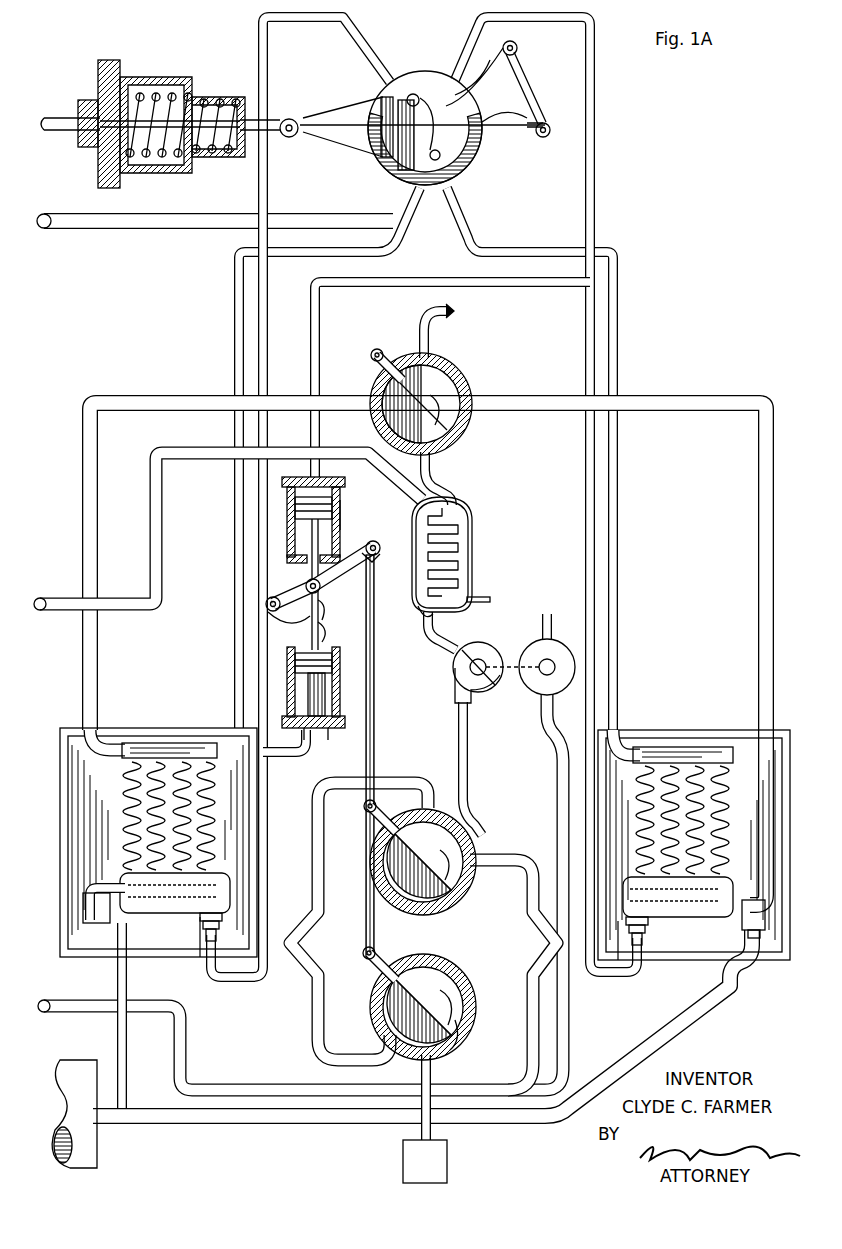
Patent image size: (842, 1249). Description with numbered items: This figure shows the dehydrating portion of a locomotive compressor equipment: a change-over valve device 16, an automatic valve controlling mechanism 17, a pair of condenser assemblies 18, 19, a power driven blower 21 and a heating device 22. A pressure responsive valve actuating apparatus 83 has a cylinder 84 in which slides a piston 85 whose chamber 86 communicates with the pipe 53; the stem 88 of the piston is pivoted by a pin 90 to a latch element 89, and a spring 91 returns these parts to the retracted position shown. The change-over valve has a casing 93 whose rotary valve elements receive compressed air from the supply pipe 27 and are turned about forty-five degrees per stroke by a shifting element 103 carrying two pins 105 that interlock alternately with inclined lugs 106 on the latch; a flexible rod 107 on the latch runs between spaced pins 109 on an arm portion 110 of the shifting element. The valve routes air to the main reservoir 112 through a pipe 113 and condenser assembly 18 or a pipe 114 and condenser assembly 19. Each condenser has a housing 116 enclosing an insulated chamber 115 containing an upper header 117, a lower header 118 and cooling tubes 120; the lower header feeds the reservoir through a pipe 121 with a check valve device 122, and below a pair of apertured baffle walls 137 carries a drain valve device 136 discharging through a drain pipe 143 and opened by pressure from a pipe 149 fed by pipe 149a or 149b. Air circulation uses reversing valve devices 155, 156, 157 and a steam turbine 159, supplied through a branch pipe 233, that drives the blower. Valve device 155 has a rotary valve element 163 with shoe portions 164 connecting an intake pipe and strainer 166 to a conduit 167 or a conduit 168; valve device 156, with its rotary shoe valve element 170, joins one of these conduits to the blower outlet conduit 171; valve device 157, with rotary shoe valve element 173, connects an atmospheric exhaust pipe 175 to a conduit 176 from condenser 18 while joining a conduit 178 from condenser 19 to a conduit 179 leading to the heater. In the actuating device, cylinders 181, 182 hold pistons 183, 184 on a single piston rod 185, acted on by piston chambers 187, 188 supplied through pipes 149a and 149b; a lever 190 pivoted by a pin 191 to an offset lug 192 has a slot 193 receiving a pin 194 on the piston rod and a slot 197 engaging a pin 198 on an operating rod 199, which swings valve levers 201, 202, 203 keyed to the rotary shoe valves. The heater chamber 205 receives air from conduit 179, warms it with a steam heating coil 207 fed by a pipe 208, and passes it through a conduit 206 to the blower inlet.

The change-over valve device 16 is at (409, 96).
The automatic valve controlling mechanism 17 is at (301, 595).
The condenser assembly 18 is at (141, 714).
The condenser assembly 19 is at (695, 714).
The power driven blower 21 is at (499, 645).
The heating device 22 is at (468, 554).
The supply pipe 27 is at (185, 228).
The pipe 53 is at (52, 118).
The pressure responsive valve actuating apparatus 83 is at (143, 112).
The cylinder 84 is at (147, 78).
The piston 85 is at (122, 70).
The chamber 86 is at (92, 148).
The stem 88 is at (228, 160).
The latch element 89 is at (375, 118).
The pin 90 is at (290, 118).
The spring 91 is at (165, 150).
The casing 93 is at (478, 158).
The shifting element 103 is at (465, 105).
The projecting pins 105 is at (440, 145).
The outwardly inclined lugs 106 is at (382, 150).
The flexible rod 107 is at (516, 130).
The spaced pins 109 is at (545, 122).
The arm portion 110 is at (493, 100).
The main reservoir 112 is at (83, 1159).
The pipe 113 is at (234, 336).
The pipe 114 is at (620, 325).
The chamber 115 is at (80, 808).
The housing 116 is at (66, 770).
The upper header 117 is at (122, 752).
The lower header 118 is at (215, 875).
The cooling tubes 120 is at (195, 812).
The pipe 121 is at (130, 960).
The check valve device 122 is at (96, 925).
The drain valve device 136 is at (205, 930).
The apertured baffle walls 137 is at (150, 900).
The drain pipe 143 is at (198, 955).
The pipe 149 is at (255, 968).
The pipe 149a is at (340, 20).
The pipe 149b is at (530, 20).
The reversing valve device 155 is at (425, 992).
The reversing valve device 156 is at (429, 857).
The reversing valve device 157 is at (443, 385).
The steam turbine 159 is at (557, 650).
The valve element 163 is at (466, 994).
The shoe portions 164 is at (465, 980).
The intake pipe and strainer 166 is at (432, 1133).
The conduit 167 is at (500, 1045).
The conduit 168 is at (316, 1035).
The rotary shoe valve element 170 is at (419, 866).
The conduit 171 is at (470, 745).
The rotary shoe valve element 173 is at (417, 404).
The atmospheric exhaust pipe 175 is at (452, 318).
The conduit 176 is at (158, 410).
The conduit 178 is at (672, 410).
The conduit 179 is at (446, 475).
The cylinder 181 is at (295, 663).
The cylinder 182 is at (340, 520).
The piston 183 is at (308, 683).
The piston 184 is at (322, 500).
The piston rod 185 is at (312, 633).
The piston chamber 187 is at (328, 736).
The piston chamber 188 is at (305, 500).
The lever 190 is at (322, 590).
The pin 191 is at (264, 600).
The offset lug 192 is at (280, 622).
The slot 193 is at (326, 630).
The pin 194 is at (326, 608).
The slot 197 is at (389, 556).
The pin 198 is at (378, 548).
The operating rod 199 is at (374, 670).
The valve lever 201 is at (380, 958).
The valve lever 202 is at (378, 822).
The valve lever 203 is at (388, 355).
The chamber 205 is at (437, 615).
The conduit 206 is at (438, 640).
The heating coil 207 is at (472, 546).
The pipe 208 is at (158, 520).
The branch pipe 233 is at (185, 1050).